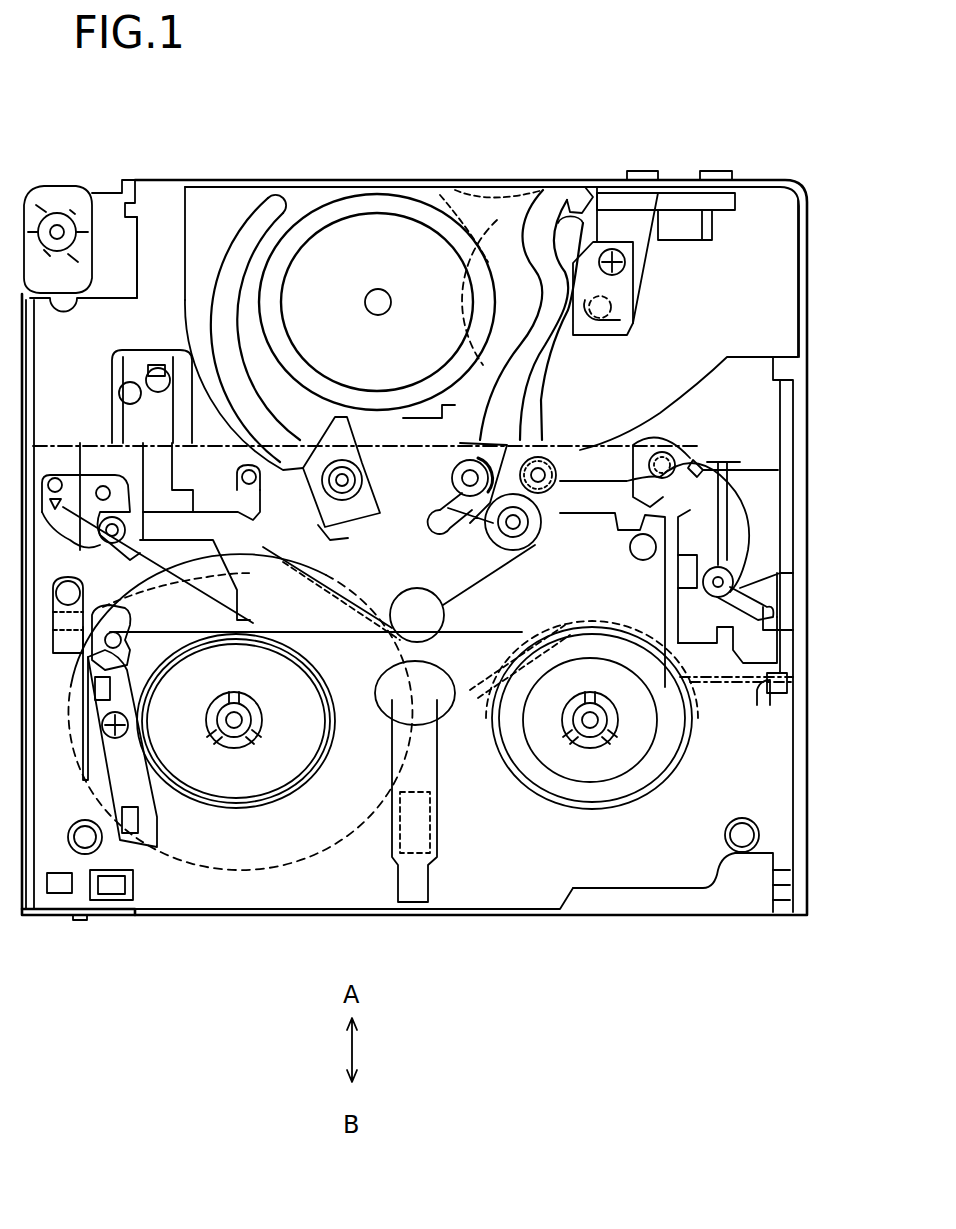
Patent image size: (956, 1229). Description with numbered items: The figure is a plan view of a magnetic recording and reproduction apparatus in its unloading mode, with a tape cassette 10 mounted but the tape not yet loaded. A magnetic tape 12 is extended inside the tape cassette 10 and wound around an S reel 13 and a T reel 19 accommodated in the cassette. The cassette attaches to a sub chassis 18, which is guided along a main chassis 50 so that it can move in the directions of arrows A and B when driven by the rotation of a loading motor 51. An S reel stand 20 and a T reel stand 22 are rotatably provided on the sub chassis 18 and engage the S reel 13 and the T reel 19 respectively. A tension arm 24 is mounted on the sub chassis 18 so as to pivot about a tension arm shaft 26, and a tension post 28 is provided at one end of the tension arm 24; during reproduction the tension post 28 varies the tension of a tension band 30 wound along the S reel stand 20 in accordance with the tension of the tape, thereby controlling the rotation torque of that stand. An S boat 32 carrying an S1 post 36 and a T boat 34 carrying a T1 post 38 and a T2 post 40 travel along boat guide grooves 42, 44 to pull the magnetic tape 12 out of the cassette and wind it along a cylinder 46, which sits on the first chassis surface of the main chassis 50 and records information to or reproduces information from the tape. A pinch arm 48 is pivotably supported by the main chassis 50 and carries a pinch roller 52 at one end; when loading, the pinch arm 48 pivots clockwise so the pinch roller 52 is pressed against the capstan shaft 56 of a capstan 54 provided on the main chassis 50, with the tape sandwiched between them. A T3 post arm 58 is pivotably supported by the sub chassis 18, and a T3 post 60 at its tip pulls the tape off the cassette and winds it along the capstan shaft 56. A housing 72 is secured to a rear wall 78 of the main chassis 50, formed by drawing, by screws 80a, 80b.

The tape cassette 10 is at (715, 422).
The magnetic tape 12 is at (230, 450).
The S reel 13 is at (228, 865).
The sub chassis 18 is at (665, 875).
The T reel 19 is at (580, 778).
The S reel stand 20 is at (270, 770).
The T reel stand 22 is at (660, 765).
The tension arm 24 is at (248, 520).
The tension arm shaft 26 is at (105, 490).
The tension post 28 is at (252, 478).
The tension band 30 is at (205, 593).
The S boat 32 is at (378, 503).
The T boat 34 is at (455, 520).
The S1 post 36 is at (347, 470).
The T1 post 38 is at (418, 530).
The T2 post 40 is at (463, 478).
The boat guide groove 42 is at (268, 196).
The boat guide groove 44 is at (557, 240).
The cylinder 46 is at (371, 192).
The pinch arm 48 is at (575, 510).
The main chassis 50 is at (150, 180).
The loading motor 51 is at (60, 186).
The pinch roller 52 is at (515, 552).
The capstan 54 is at (770, 248).
The capstan shaft 56 is at (602, 322).
The T3 post arm 58 is at (740, 541).
The T3 post 60 is at (541, 453).
The housing 72 is at (770, 318).
The rear wall 78 is at (505, 183).
The screw 80a is at (634, 170).
The screw 80b is at (715, 170).